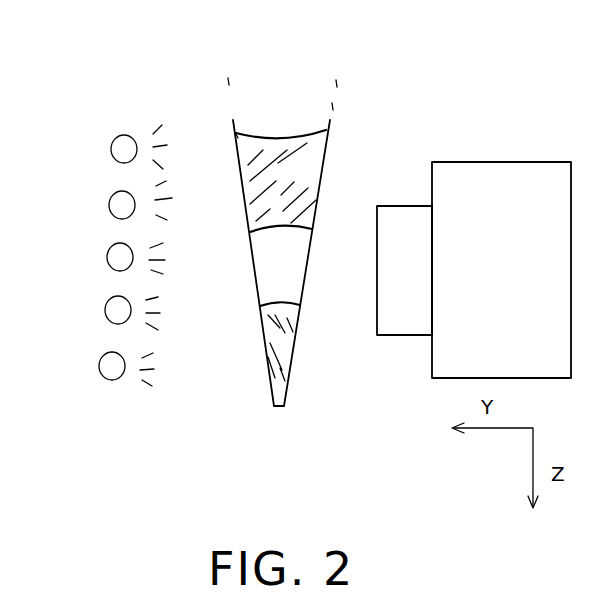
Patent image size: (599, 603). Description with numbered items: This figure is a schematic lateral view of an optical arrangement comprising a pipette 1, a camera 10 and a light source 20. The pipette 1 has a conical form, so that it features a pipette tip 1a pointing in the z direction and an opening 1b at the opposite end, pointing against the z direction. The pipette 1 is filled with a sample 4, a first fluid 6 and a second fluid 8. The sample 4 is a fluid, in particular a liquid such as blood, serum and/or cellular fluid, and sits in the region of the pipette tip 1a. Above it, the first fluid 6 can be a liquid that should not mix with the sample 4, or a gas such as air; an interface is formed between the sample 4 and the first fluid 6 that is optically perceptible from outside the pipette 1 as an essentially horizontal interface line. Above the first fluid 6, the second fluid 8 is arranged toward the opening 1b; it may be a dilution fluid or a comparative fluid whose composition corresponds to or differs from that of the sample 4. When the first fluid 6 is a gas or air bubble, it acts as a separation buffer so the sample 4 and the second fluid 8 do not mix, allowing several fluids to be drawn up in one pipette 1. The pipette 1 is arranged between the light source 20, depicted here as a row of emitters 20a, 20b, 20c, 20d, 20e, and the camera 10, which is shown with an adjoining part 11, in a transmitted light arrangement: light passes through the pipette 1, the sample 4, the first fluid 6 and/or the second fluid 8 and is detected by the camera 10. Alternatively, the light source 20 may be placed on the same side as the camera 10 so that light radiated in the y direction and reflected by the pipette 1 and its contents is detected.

The pipette 1 is at (311, 98).
The pipette tip 1a is at (278, 409).
The opening 1b is at (260, 117).
The sample 4 is at (284, 355).
The first fluid 6 is at (272, 272).
The second fluid 8 is at (293, 178).
The camera 10 is at (530, 136).
The detector window 11 is at (404, 320).
The light source 20 is at (94, 397).
The light source a 20a is at (124, 150).
The light source b 20b is at (122, 206).
The light source c 20c is at (120, 258).
The light source d 20d is at (118, 311).
The light source e 20e is at (112, 368).